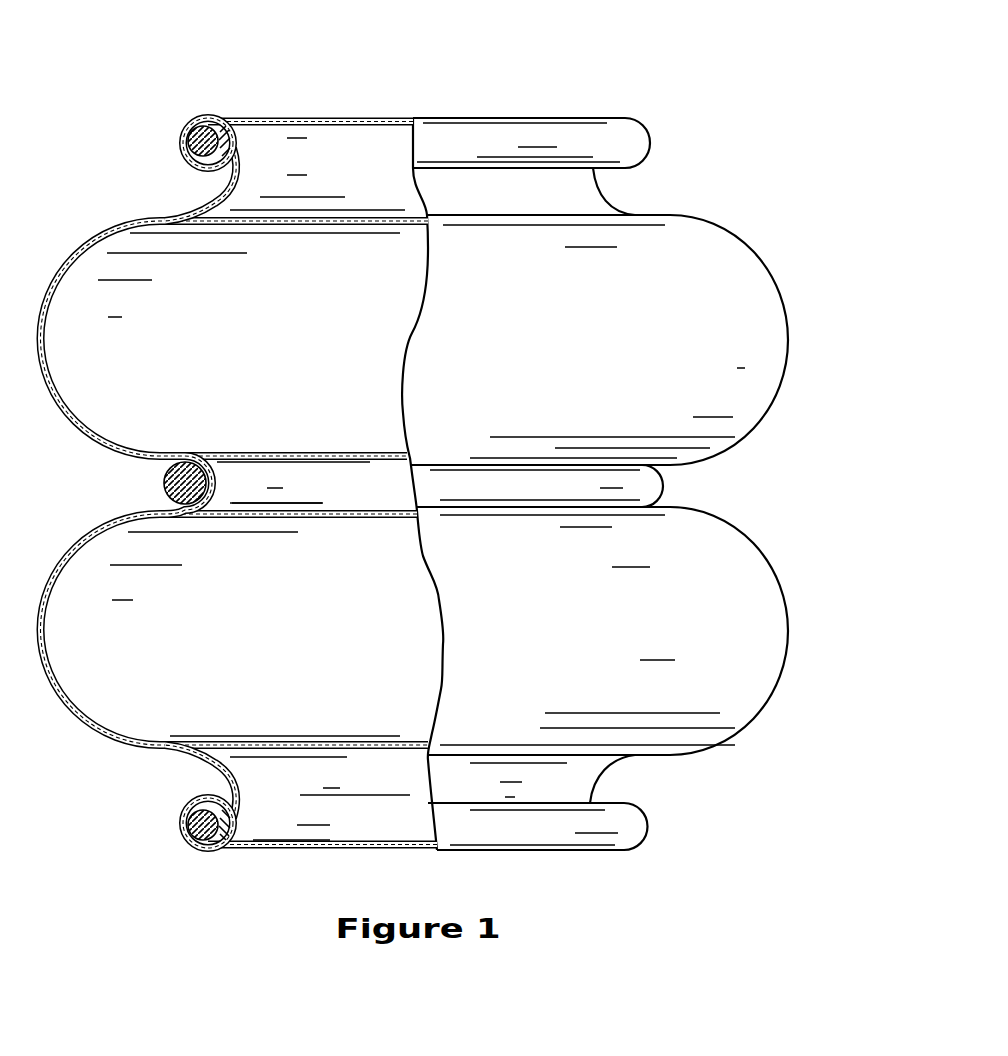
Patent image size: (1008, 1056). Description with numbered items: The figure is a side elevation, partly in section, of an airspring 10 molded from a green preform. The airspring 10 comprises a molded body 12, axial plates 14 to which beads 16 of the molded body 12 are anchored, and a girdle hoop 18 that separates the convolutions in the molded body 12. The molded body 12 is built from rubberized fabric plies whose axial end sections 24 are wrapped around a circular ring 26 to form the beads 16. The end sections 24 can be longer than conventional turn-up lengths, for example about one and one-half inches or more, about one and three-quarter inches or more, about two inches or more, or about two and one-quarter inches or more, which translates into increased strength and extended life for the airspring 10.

The airspring 10 is at (808, 271).
The molded body 12 is at (765, 629).
The axial plates 14 is at (480, 117).
The beads 16 is at (178, 145).
The girdle hoop 18 is at (172, 490).
The axial end sections 24 is at (148, 215).
The circular ring 26 is at (195, 128).